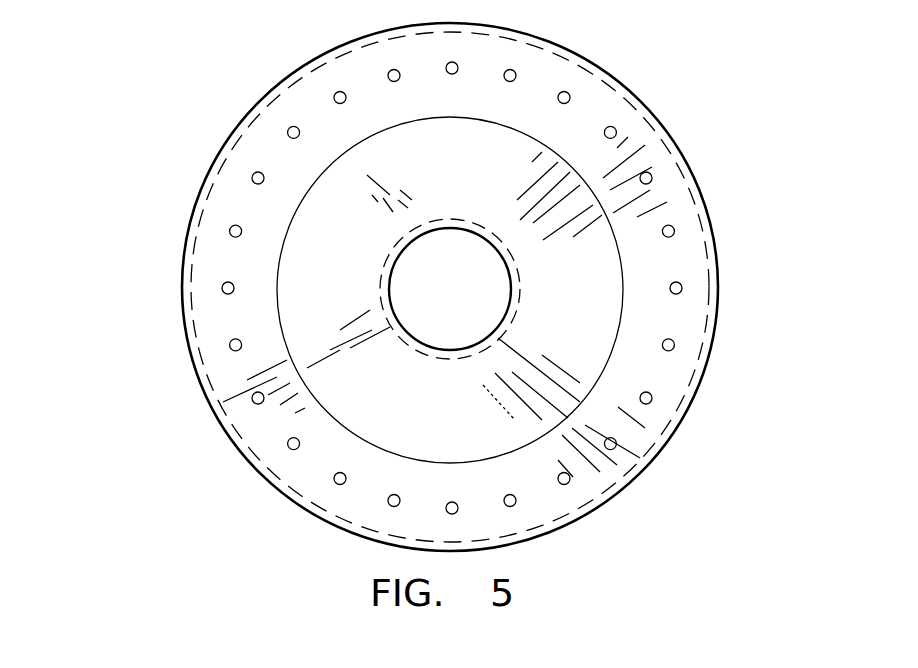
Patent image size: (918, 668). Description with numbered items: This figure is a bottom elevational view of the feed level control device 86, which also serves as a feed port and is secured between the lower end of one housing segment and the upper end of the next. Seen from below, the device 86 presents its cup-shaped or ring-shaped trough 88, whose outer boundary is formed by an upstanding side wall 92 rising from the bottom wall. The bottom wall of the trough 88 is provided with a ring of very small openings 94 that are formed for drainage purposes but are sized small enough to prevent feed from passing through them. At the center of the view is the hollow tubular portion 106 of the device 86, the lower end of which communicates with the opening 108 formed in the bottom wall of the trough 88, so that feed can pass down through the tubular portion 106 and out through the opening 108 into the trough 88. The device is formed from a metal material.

The feed level control device 86 is at (426, 289).
The trough 88 is at (648, 100).
The upstanding side wall 92 is at (703, 386).
The openings 94 is at (676, 344).
The hollow tubular portion 106 is at (503, 285).
The opening 108 is at (378, 419).